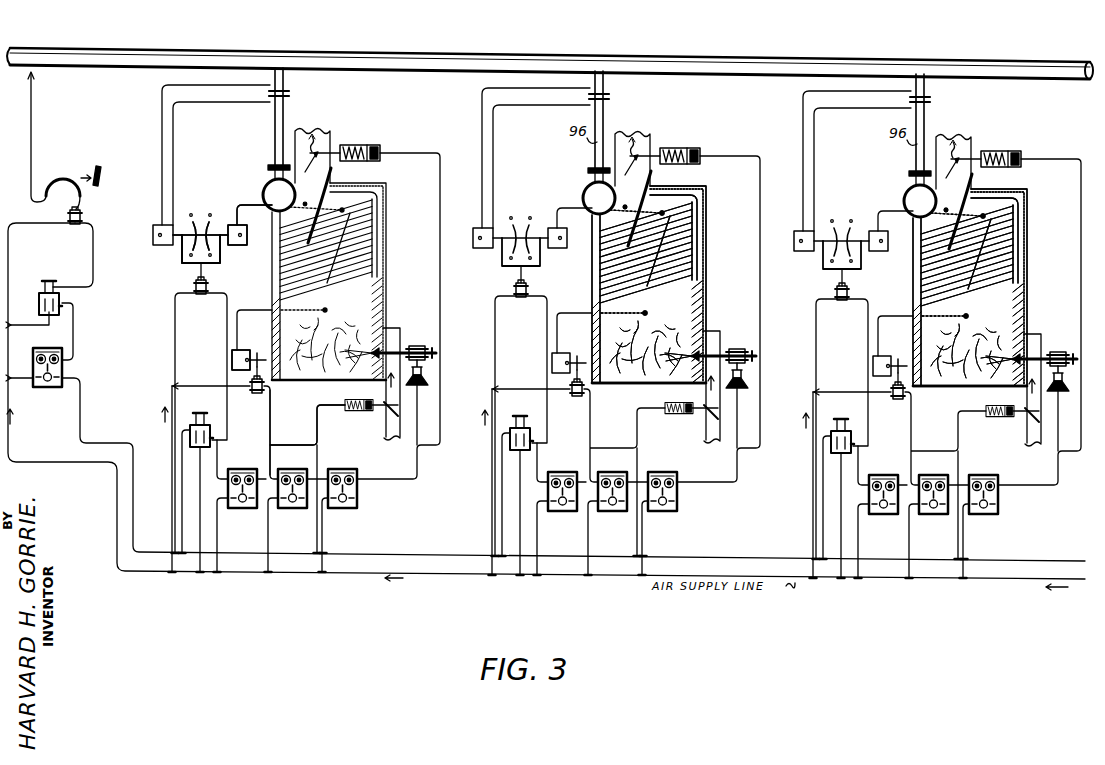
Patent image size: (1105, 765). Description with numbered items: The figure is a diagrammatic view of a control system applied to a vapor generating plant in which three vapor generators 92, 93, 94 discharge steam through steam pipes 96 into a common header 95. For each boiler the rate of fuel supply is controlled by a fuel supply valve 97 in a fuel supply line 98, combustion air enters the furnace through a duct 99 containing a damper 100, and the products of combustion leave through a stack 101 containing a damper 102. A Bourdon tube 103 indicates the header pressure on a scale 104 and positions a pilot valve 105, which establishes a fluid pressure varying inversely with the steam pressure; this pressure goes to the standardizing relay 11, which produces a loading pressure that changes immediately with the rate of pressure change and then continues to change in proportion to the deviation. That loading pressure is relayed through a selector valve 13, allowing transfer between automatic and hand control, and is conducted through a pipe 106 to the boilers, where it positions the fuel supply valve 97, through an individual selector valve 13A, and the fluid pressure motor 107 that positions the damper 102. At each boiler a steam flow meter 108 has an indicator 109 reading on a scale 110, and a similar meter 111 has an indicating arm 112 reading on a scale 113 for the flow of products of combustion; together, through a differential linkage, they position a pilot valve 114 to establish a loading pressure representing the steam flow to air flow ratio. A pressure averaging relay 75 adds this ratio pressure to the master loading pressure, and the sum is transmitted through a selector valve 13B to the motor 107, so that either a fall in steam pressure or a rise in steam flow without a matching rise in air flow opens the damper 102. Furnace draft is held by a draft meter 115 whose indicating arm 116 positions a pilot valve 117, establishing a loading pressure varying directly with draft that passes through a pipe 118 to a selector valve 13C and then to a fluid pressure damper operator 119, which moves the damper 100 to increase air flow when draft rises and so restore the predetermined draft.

The standardizing relay 11 is at (63, 298).
The selector valve 13 is at (62, 368).
The selector valve 13A is at (342, 499).
The selector valve 13B is at (242, 499).
The selector valve 13C is at (292, 499).
The pressure averaging relay 75 is at (208, 430).
The vapor generator 92 is at (386, 233).
The vapor generator 93 is at (705, 258).
The vapor generator 94 is at (1028, 268).
The common header 95 is at (386, 50).
The steam pipe 96 is at (274, 139).
The fuel supply valve 97 is at (417, 345).
The fuel supply line 98 is at (434, 350).
The duct 99 is at (387, 439).
The damper 100 is at (386, 413).
The stack 101 is at (332, 134).
The damper 102 is at (316, 205).
The Bourdon tube 103 is at (54, 159).
The scale 104 is at (100, 179).
The pilot valve 105 is at (81, 221).
The pipe 106 is at (80, 404).
The fluid pressure motor 107 is at (373, 145).
The steam flow meter 108 is at (153, 242).
The indicator 109 is at (162, 248).
The scale 110 is at (192, 222).
The meter 111 is at (263, 267).
The indicating arm 112 is at (244, 246).
The scale 113 is at (218, 222).
The pilot valve 114 is at (197, 293).
The furnace draft meter 115 is at (239, 348).
The indicating arm 116 is at (257, 353).
The pilot valve 117 is at (264, 388).
The pipe 118 is at (270, 399).
The fluid pressure damper operator 119 is at (351, 390).